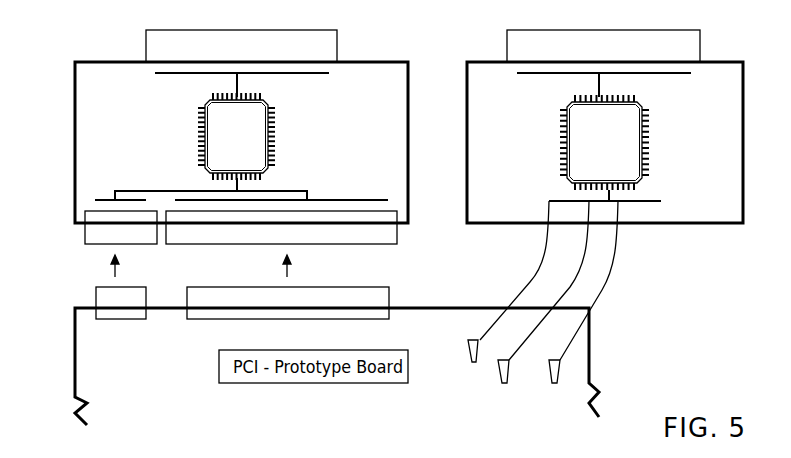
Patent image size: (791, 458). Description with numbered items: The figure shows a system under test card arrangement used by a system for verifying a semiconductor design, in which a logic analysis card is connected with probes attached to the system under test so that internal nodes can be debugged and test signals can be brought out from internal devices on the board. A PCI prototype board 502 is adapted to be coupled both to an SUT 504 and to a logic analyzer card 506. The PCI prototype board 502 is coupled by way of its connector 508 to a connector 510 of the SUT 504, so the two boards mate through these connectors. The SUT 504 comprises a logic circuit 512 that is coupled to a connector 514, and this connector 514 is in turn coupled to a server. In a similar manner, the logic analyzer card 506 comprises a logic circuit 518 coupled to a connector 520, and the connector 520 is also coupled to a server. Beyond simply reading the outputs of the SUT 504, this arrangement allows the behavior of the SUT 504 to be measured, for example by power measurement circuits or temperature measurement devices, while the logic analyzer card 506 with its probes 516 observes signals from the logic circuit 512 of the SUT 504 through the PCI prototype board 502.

The PCI prototype board 502 is at (593, 357).
The SUT 504 is at (388, 60).
The logic analyzer card 506 is at (743, 123).
The connector 508 is at (372, 295).
The connector 510 is at (332, 212).
The logic circuit 512 is at (264, 142).
The connector 514 is at (338, 45).
The cables with probe connectors 516 is at (612, 282).
The logic circuit 518 is at (645, 142).
The connector 520 is at (702, 45).